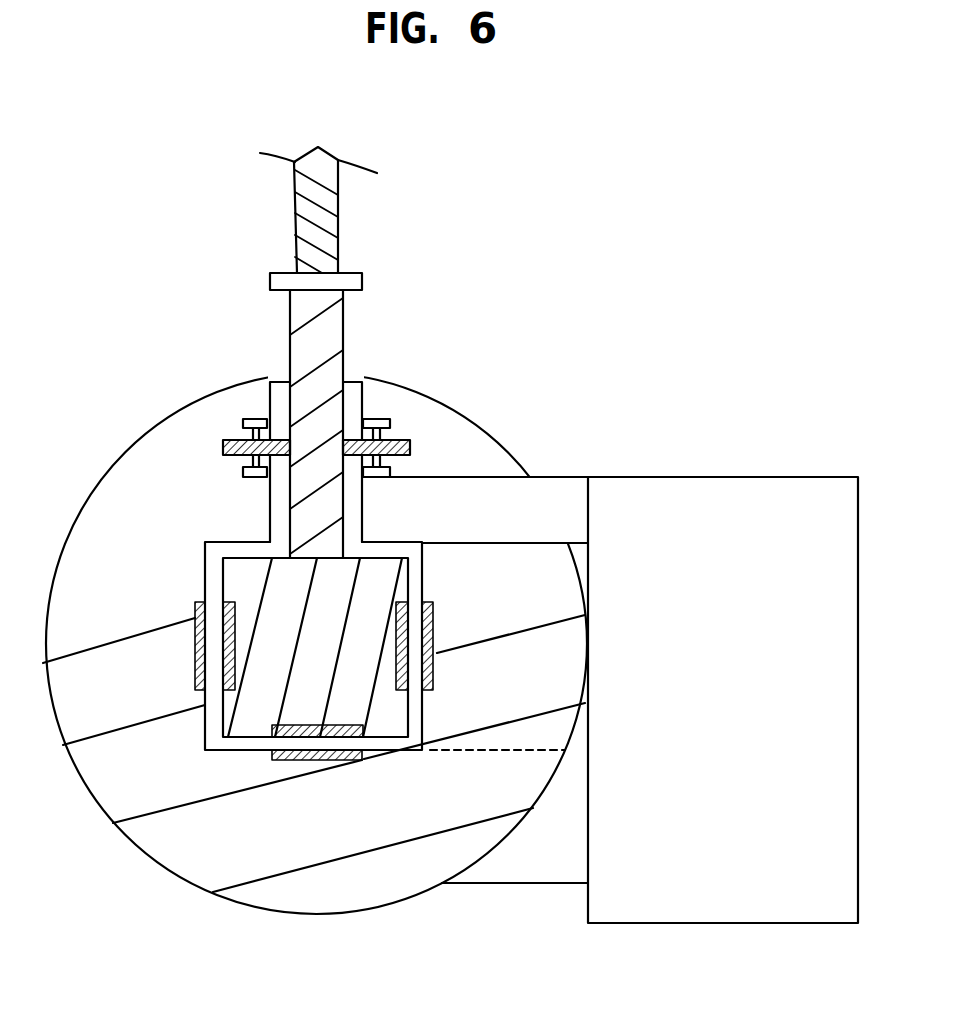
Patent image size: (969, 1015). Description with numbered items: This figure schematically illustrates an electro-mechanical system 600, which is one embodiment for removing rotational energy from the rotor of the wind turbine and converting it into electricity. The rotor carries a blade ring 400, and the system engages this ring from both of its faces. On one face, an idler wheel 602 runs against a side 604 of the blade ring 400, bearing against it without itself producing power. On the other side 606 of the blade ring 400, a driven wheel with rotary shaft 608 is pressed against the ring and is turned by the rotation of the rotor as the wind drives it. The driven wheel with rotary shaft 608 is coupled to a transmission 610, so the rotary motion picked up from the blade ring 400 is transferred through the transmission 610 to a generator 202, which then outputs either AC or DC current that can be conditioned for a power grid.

The generator 202 is at (737, 477).
The blade ring 400 is at (367, 326).
The electro-mechanical system 600 is at (637, 438).
The idler wheel 602 is at (222, 449).
The side of the blade ring 604 is at (287, 357).
The other side of the blade ring 606 is at (346, 400).
The driven wheel with rotary shaft 608 is at (427, 445).
The transmission 610 is at (480, 503).